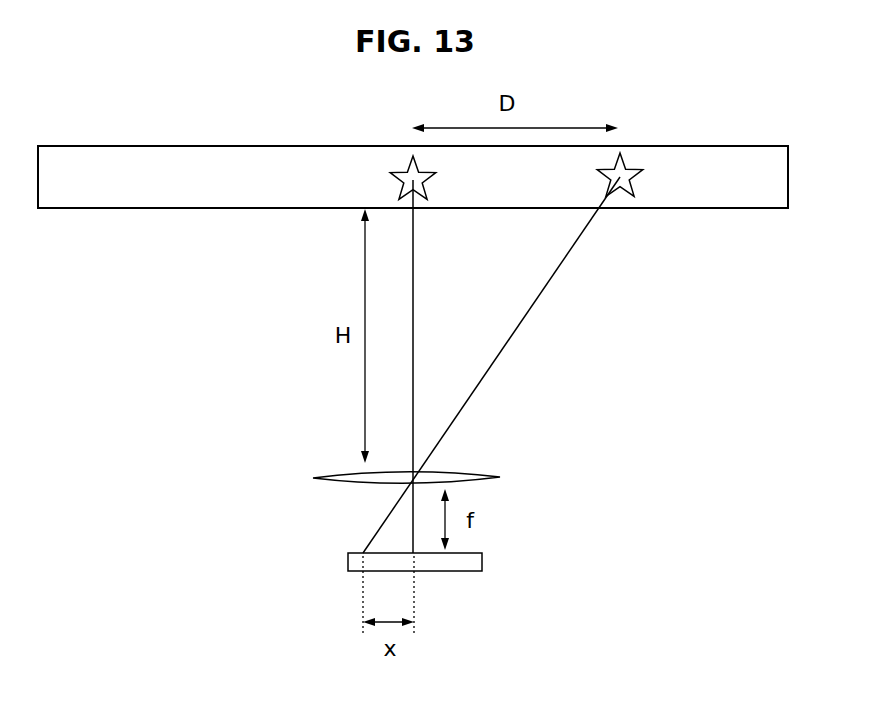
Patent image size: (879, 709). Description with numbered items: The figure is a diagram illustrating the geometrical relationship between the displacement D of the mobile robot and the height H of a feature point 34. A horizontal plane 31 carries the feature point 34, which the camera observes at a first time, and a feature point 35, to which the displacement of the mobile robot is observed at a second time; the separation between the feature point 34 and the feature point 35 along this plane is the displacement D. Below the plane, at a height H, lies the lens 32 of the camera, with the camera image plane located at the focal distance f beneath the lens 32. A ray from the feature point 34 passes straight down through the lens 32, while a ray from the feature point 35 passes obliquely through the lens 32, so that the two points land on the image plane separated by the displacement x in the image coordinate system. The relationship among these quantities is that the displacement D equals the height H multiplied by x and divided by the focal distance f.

The object plane 31 is at (705, 147).
The lens 32 is at (502, 474).
The feature point 34 is at (393, 172).
The feature point 35 is at (632, 194).